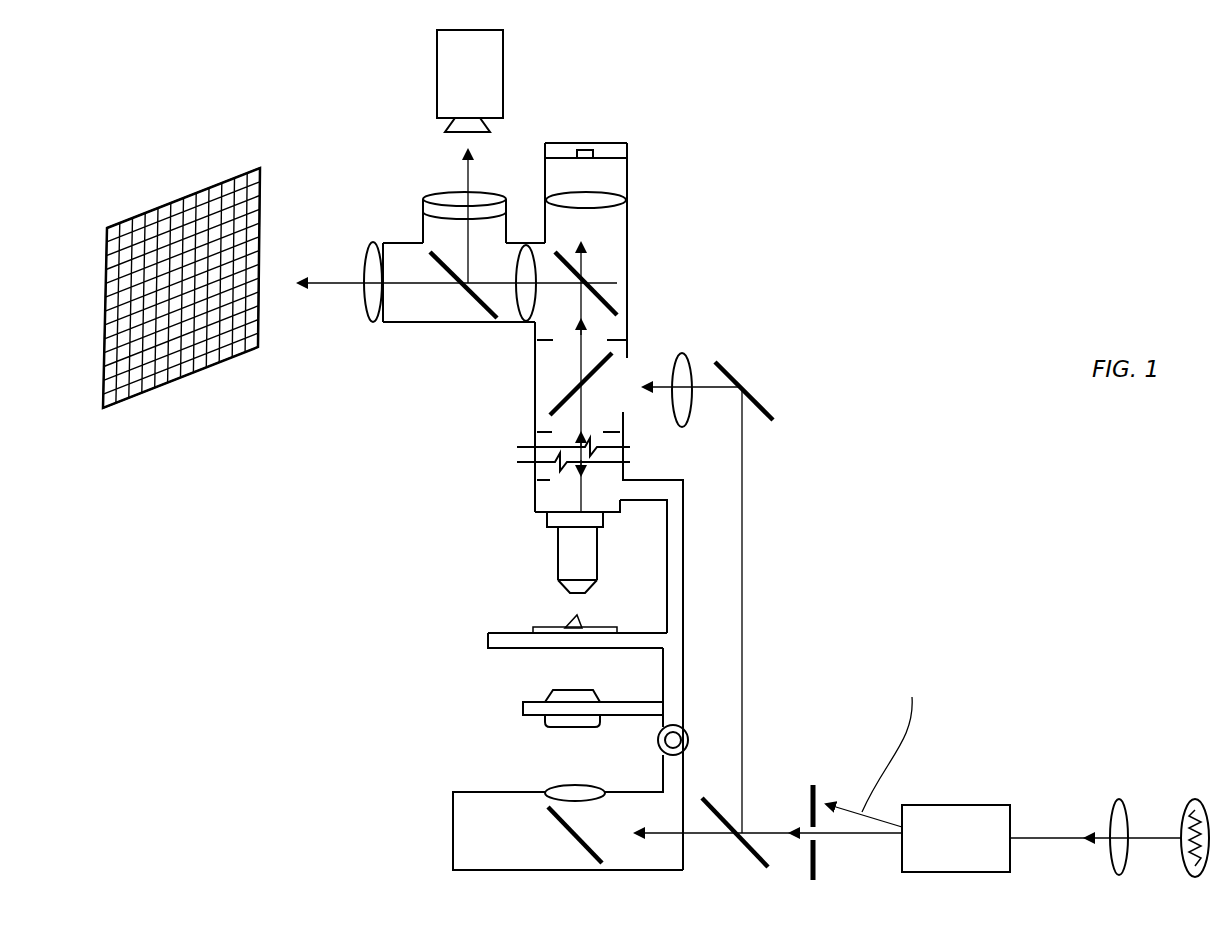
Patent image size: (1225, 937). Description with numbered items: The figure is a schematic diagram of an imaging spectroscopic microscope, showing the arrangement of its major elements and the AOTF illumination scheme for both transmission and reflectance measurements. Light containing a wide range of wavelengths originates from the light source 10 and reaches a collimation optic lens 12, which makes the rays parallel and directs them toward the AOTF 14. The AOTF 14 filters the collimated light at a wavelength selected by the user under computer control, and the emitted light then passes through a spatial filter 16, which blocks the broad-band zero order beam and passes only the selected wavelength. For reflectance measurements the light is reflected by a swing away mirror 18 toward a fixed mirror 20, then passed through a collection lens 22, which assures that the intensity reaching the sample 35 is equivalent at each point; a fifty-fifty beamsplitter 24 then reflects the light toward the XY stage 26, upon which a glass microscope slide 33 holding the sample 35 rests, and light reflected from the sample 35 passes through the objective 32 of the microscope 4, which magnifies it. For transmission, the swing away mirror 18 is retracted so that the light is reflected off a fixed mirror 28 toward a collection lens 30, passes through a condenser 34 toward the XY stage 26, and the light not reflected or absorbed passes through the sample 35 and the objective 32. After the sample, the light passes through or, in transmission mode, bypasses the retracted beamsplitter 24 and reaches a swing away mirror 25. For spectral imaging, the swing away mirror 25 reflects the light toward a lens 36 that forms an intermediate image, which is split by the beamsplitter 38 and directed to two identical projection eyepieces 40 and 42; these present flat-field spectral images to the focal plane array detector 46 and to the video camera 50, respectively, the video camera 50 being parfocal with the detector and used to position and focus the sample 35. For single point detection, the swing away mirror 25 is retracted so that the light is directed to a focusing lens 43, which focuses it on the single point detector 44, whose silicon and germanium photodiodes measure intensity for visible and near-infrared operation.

The microscope 4 is at (372, 517).
The light source 10 is at (1193, 800).
The collimation optic lens 12 is at (1118, 800).
The AOTF 14 is at (962, 805).
The spatial filter 16 is at (817, 790).
The swing away mirror 18 is at (715, 805).
The fixed mirror 20 is at (773, 413).
The collection lens 22 is at (688, 358).
The 50/50 beamsplitter 24 is at (558, 402).
The swing away mirror 25 is at (627, 302).
The XY stage 26 is at (497, 632).
The fixed mirror 28 is at (567, 828).
The collection lens 30 is at (548, 790).
The objective 32 is at (557, 545).
The glass microscope slide 33 is at (543, 627).
The sample 35 is at (582, 625).
The condenser 34 is at (550, 693).
The lens 36 is at (528, 240).
The beamsplitter 38 is at (477, 307).
The projection eyepiece 40 is at (377, 242).
The projection eyepiece 42 is at (423, 200).
The focusing lens 43 is at (612, 195).
The single point detector 44 is at (602, 143).
The focal plane array detector 46 is at (262, 180).
The video camera 50 is at (505, 53).